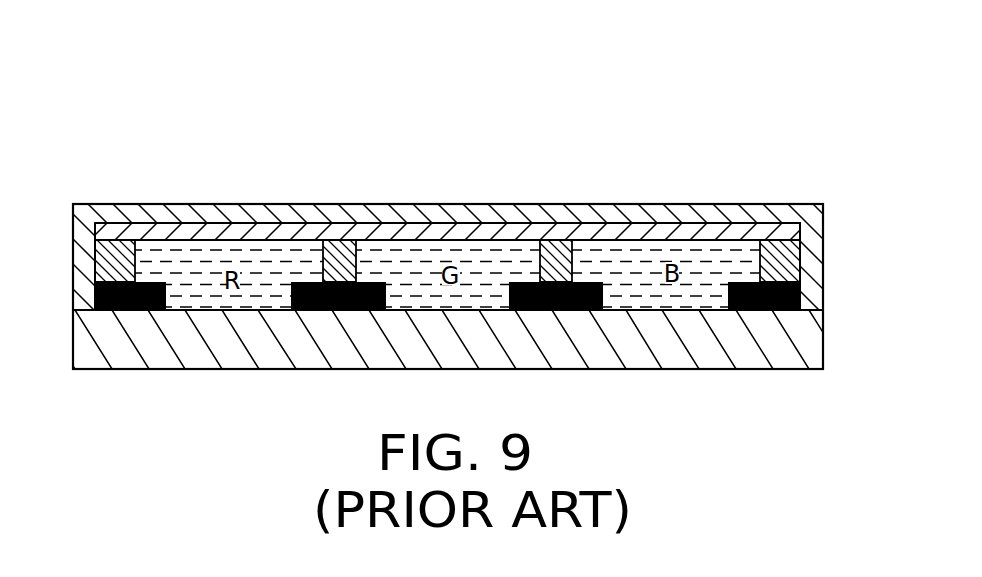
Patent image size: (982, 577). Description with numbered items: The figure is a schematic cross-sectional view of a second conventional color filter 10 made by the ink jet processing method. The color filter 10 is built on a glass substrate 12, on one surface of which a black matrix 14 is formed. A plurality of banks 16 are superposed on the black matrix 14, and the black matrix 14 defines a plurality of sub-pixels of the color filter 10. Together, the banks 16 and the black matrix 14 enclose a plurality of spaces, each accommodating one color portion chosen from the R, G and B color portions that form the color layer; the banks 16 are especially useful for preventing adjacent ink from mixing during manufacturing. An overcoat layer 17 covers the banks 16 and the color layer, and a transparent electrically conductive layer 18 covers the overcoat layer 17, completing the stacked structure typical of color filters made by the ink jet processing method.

The second conventional color filter 10 is at (486, 58).
The glass substrate 12 is at (808, 343).
The black matrix 14 is at (798, 288).
The banks 16 is at (790, 258).
The overcoat layer 17 is at (664, 226).
The transparent electrically conductive layer 18 is at (467, 212).